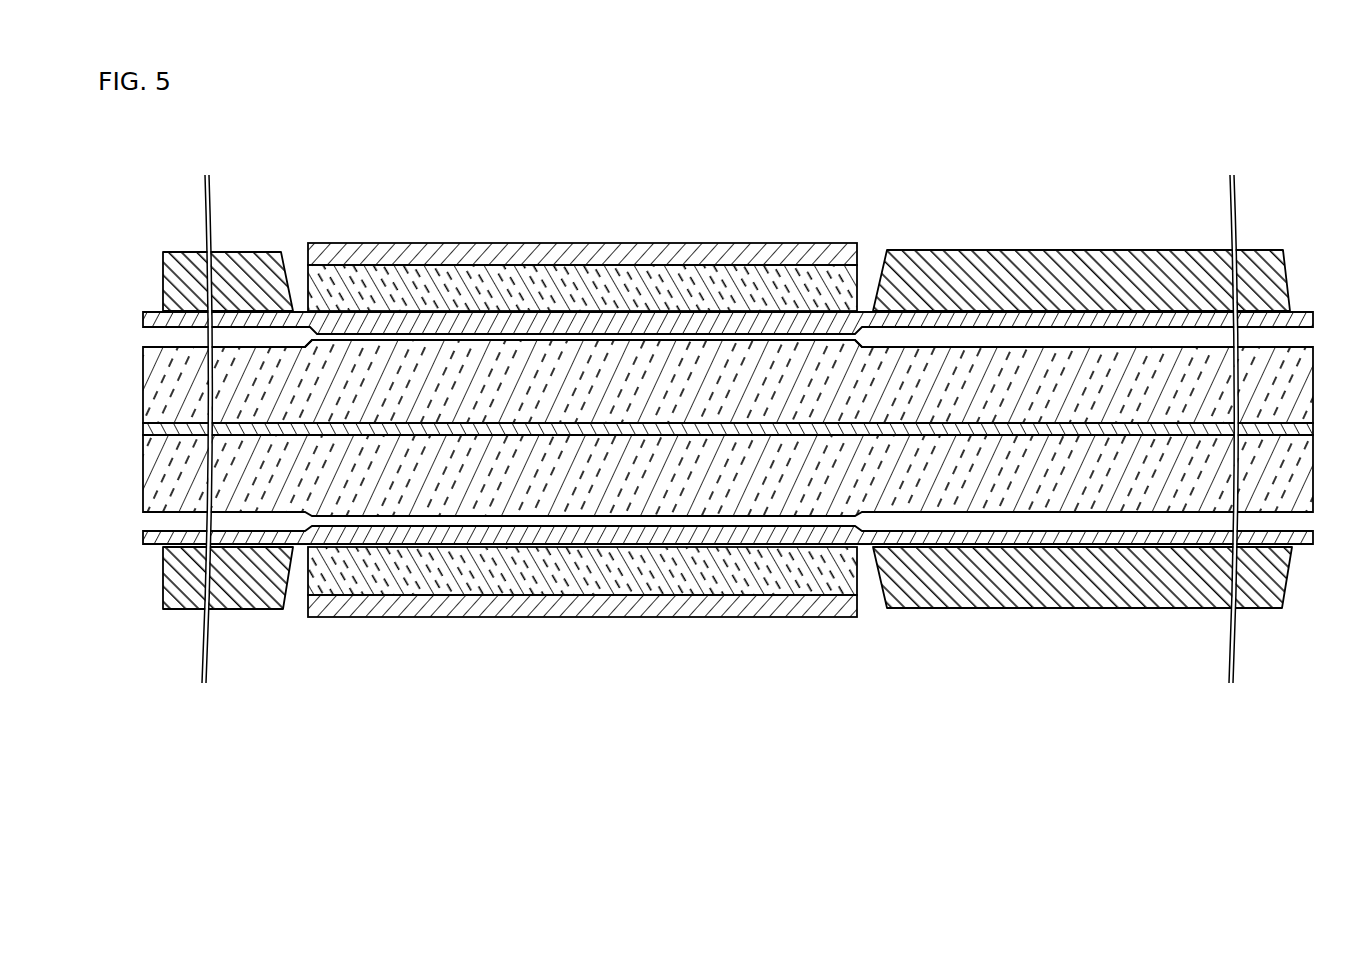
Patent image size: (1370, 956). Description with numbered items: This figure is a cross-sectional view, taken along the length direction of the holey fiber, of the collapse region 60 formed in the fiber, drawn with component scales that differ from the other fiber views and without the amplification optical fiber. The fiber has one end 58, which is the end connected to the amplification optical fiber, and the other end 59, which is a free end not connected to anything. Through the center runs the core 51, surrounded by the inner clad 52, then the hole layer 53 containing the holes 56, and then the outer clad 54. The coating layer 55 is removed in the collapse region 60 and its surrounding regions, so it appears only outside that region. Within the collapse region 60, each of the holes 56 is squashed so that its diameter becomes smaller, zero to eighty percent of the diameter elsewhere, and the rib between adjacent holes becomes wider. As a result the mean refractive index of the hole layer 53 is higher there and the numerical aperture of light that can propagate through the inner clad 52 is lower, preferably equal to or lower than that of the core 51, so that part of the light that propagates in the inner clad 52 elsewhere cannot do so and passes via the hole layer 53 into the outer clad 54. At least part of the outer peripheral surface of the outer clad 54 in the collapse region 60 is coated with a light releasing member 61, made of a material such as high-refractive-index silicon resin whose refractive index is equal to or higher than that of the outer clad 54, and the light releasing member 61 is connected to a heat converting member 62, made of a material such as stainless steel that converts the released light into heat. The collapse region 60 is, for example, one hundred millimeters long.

The core 51 is at (728, 344).
The inner clad 52 is at (1065, 425).
The hole layer 53 is at (988, 320).
The outer clad 54 is at (1058, 367).
The coating layer 55 is at (252, 263).
The holes 56 is at (938, 332).
The one end 58 is at (143, 355).
The other end 59 is at (1313, 355).
The collapse region 60 is at (582, 362).
The light releasing member 61 is at (467, 260).
The heat converting member 62 is at (515, 257).